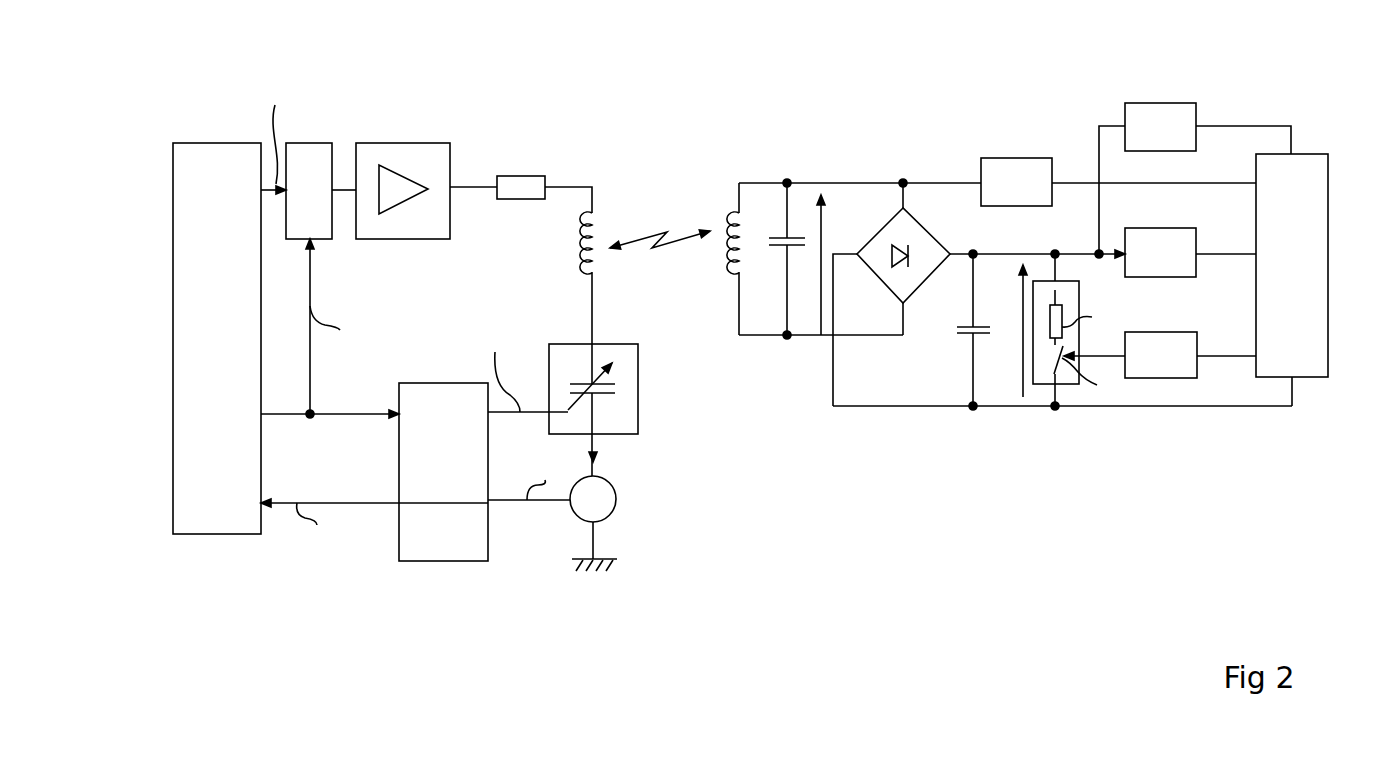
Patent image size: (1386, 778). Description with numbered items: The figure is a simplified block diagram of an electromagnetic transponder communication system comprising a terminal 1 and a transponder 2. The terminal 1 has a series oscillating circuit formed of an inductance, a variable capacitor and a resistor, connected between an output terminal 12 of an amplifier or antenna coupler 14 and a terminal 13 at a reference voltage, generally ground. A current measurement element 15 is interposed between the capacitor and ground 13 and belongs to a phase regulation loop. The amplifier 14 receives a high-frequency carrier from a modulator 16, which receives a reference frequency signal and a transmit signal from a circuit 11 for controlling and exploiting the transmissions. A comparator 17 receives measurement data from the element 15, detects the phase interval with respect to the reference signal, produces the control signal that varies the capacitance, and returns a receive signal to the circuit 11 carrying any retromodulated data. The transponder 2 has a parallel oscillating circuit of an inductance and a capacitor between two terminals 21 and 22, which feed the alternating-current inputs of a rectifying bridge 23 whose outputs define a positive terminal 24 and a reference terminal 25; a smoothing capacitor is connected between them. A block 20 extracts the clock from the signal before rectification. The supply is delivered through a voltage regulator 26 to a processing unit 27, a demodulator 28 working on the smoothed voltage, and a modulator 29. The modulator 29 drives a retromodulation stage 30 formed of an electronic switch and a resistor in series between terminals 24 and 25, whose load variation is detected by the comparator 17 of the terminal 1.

The terminal 1 is at (441, 381).
The transponder 2 is at (1035, 327).
The circuit for controlling and exploiting the transmissions 11 is at (214, 143).
The output terminal of amplifier 12 is at (472, 187).
The terminal at a reference voltage 13 is at (597, 547).
The amplifier or antenna coupler 14 is at (404, 143).
The current measurement element 15 is at (620, 503).
The modulator 16 is at (303, 143).
The comparator 17 is at (427, 562).
The clock extraction block 20 is at (1007, 158).
The first terminal of the oscillating circuit 21 is at (787, 183).
The second terminal of the oscillating circuit 22 is at (785, 347).
The rectifying bridge 23 is at (925, 235).
The positive terminal 24 is at (978, 252).
The reference terminal 25 is at (973, 406).
The voltage regulator 26 is at (1185, 103).
The processing unit 27 is at (1328, 198).
The demodulator 28 is at (1153, 228).
The modulator 29 is at (1153, 332).
The modulation stage 30 is at (1079, 300).